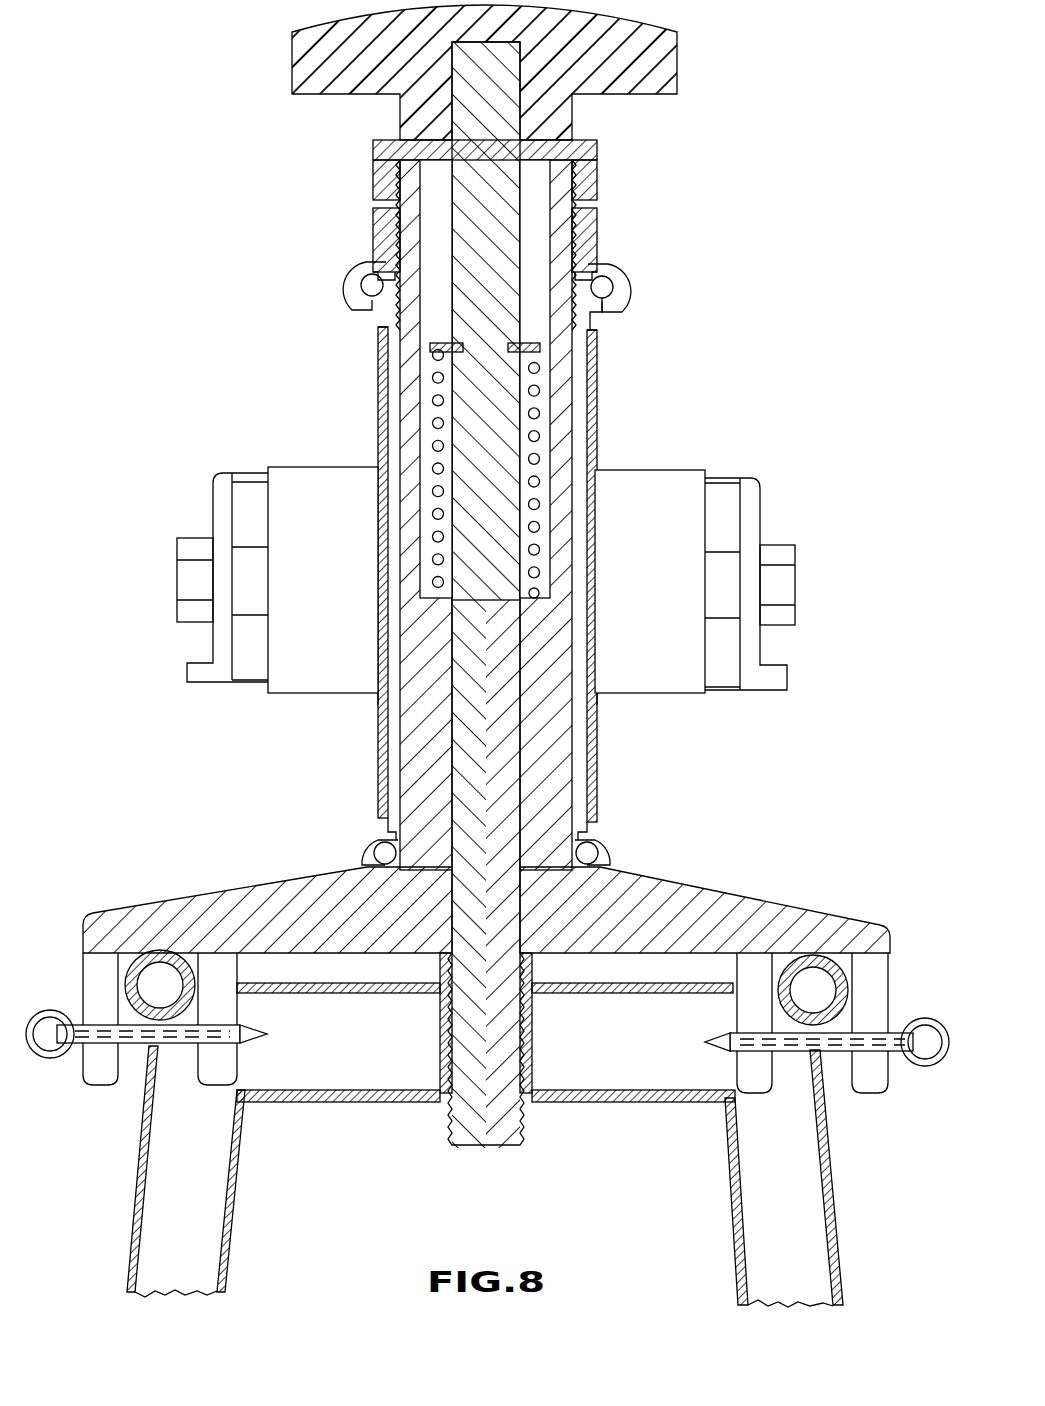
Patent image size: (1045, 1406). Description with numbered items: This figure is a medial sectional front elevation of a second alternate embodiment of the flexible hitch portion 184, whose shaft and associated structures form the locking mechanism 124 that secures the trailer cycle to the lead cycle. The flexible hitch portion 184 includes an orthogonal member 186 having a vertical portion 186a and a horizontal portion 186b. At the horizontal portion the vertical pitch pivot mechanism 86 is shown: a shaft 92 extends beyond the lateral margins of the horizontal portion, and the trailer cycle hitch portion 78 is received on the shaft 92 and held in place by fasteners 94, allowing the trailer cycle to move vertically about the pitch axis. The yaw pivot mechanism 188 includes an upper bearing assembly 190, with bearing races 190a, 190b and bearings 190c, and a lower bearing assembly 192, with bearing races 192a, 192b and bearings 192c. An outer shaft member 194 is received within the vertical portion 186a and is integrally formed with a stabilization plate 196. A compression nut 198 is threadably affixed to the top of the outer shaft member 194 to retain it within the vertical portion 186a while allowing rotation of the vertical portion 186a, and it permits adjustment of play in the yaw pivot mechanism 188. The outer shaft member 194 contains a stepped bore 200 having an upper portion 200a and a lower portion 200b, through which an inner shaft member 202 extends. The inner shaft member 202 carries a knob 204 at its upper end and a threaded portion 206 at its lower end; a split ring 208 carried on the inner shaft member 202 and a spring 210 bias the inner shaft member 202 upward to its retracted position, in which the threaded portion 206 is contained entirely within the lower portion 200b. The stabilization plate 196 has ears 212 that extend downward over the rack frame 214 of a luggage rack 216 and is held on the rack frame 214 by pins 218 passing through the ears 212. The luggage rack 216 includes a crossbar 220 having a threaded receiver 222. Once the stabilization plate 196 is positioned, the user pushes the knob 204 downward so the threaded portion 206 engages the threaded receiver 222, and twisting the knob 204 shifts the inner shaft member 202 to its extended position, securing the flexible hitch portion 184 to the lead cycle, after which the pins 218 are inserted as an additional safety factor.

The knob 204 is at (680, 60).
The locking mechanism 124 is at (808, 94).
The compression nut 198 is at (597, 152).
The upper portion of stepped bore 200a is at (440, 187).
The inner shaft member 202 is at (522, 200).
The stepped bore 200 is at (440, 268).
The bearings 190c is at (507, 256).
The upper bearing assembly 190 is at (628, 280).
The yaw pivot mechanism 188 is at (775, 289).
The bearing race 190a is at (625, 300).
The flexible hitch portion 184 is at (776, 378).
The bearing race 190b is at (600, 335).
The split ring 208 is at (388, 402).
The vertical portion 186a is at (597, 385).
The spring 210 is at (440, 440).
The orthogonal member 186 is at (601, 460).
The pitch pivot mechanism 86 is at (748, 450).
The trailer cycle hitch portion 78 is at (768, 498).
The fasteners 94 is at (178, 570).
The shaft 92 is at (737, 582).
The horizontal portion 186b is at (680, 705).
The outer shaft member 194 is at (400, 735).
The lower portion of stepped bore 200b is at (455, 775).
The bearing race 192a is at (600, 812).
The lower bearing assembly 192 is at (636, 841).
The stabilization plate 196 is at (805, 915).
The bearings 192c is at (600, 853).
The bearing race 192b is at (590, 870).
The rack frame 214 is at (120, 975).
The threaded receiver 222 is at (532, 1040).
The ears 212 is at (237, 1080).
The pins 218 is at (180, 1050).
The luggage rack 216 is at (243, 1170).
The threaded portion 206 is at (520, 1135).
The crossbar 220 is at (660, 1108).